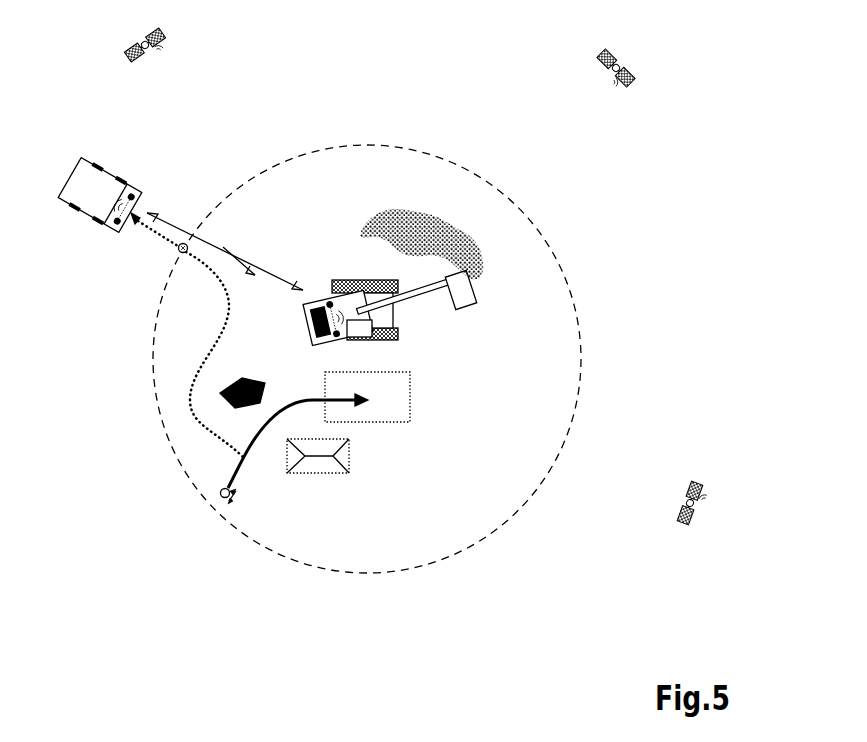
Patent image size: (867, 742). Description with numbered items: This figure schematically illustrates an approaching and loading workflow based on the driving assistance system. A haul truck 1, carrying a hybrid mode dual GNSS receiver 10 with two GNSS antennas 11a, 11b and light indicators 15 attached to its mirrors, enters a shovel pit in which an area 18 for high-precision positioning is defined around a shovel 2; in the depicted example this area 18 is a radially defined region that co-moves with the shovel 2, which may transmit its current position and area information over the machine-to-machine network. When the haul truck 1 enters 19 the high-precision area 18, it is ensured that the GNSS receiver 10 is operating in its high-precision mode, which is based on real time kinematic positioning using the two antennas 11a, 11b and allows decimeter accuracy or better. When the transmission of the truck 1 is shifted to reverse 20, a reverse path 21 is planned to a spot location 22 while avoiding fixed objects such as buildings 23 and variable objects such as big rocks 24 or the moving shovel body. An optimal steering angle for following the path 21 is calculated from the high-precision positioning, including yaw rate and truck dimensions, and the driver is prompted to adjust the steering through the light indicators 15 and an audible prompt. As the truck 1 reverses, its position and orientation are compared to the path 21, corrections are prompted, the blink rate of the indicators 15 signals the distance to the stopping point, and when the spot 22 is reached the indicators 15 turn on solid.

The haul truck 1 is at (265, 185).
The shovel 2 is at (353, 303).
The hybrid mode dual GNSS receiver 10 is at (296, 183).
The first GNSS antenna 11a is at (131, 197).
The second GNSS antenna 11b is at (117, 221).
The light indicator 15 is at (118, 205).
The area for high-precision positioning 18 is at (530, 417).
The entering the high-precision area 19 is at (177, 255).
The shifting to reverse 20 is at (217, 497).
The reverse path 21 is at (340, 400).
The spot location 22 is at (419, 374).
The buildings 23 is at (328, 467).
The big rocks 24 is at (227, 400).